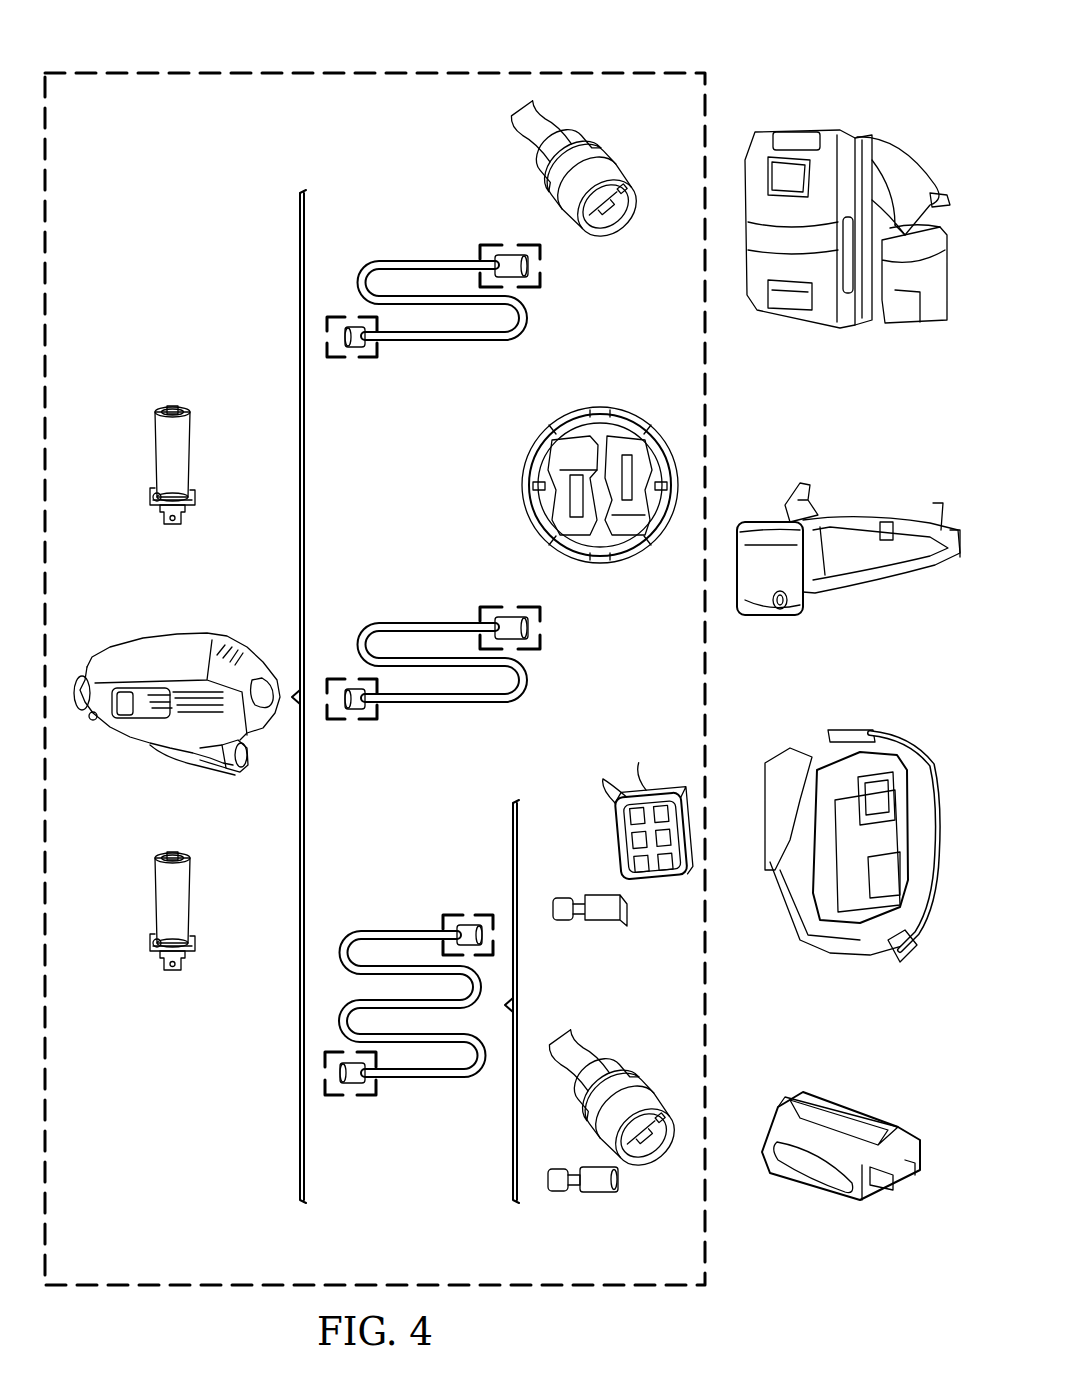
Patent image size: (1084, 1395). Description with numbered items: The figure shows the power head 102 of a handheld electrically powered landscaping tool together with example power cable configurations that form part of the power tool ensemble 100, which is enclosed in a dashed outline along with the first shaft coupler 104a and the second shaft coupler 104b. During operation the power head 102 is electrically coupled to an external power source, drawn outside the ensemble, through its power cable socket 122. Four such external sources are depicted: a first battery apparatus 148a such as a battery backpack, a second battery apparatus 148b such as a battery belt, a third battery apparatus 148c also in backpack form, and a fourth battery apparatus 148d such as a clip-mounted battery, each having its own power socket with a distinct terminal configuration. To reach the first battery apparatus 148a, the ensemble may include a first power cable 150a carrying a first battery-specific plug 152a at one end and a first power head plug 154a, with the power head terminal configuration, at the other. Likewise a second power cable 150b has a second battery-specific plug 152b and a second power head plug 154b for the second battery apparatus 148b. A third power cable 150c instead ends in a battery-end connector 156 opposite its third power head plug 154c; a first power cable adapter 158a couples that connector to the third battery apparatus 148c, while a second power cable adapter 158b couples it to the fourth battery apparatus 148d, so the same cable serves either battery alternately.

The power tool ensemble 100 is at (245, 69).
The power head 102 is at (125, 600).
The first shaft coupler 104a is at (156, 377).
The second shaft coupler 104b is at (152, 993).
The power cable socket 122 is at (242, 763).
The first battery apparatus 148a is at (845, 128).
The second battery apparatus 148b is at (848, 518).
The third battery apparatus 148c is at (840, 940).
The fourth battery apparatus 148d is at (842, 1196).
The first power cable 150a is at (377, 262).
The second power cable 150b is at (377, 624).
The third power cable 150c is at (380, 928).
The first battery-specific plug 152a is at (510, 242).
The second battery-specific plug 152b is at (510, 604).
The first power head plug 154a is at (370, 362).
The second power head plug 154b is at (370, 724).
The third power head plug 154c is at (368, 1098).
The battery-end connector 156 is at (455, 912).
The first power cable adapter 158a is at (612, 927).
The second power cable adapter 158b is at (600, 1195).